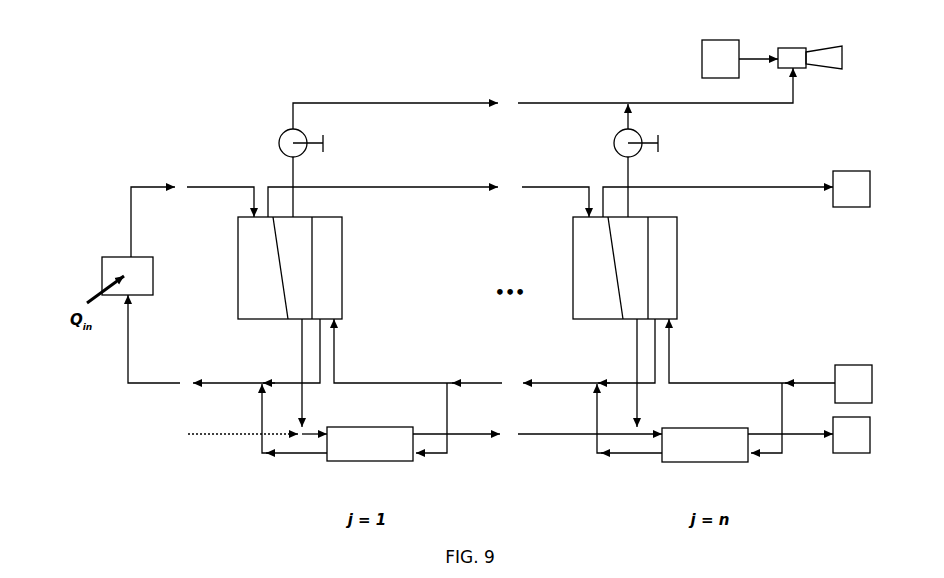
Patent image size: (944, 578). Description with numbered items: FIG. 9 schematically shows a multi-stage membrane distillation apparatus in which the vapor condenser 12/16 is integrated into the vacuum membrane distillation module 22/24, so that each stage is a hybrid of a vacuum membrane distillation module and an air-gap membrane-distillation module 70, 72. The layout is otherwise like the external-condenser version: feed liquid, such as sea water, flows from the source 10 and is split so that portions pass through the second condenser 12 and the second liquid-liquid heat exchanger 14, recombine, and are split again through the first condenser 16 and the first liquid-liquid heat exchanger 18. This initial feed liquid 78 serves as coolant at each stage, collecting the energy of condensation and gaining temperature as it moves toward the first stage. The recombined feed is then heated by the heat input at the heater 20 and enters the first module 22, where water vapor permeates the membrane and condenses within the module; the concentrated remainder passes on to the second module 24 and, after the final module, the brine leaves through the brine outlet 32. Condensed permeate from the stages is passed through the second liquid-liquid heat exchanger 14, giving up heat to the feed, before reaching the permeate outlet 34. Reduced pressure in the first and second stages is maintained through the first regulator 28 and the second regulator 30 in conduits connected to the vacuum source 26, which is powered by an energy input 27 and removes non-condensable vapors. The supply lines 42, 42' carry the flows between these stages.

The feed source 10 is at (853, 384).
The second condenser 12 is at (664, 278).
The second liquid-liquid heat exchanger 14 is at (675, 422).
The first condenser 16 is at (326, 267).
The first liquid-liquid heat exchanger 18 is at (344, 422).
The heater 20 is at (125, 270).
The first vacuum membrane distillation module 22 is at (316, 268).
The second vacuum membrane distillation module 24 is at (639, 268).
The vacuum source 26 is at (790, 50).
The energy input 27 is at (740, 59).
The first regulator 28 is at (284, 136).
The second regulator 30 is at (616, 152).
The brine outlet 32 is at (736, 194).
The permeate outlet 34 is at (851, 435).
The supply line 42 is at (220, 204).
The branch supply line 42' is at (428, 191).
The air-gap membrane-distillation module 70 is at (283, 267).
The air-gap membrane-distillation module 72 is at (604, 268).
The feed liquid stream 78 is at (322, 345).